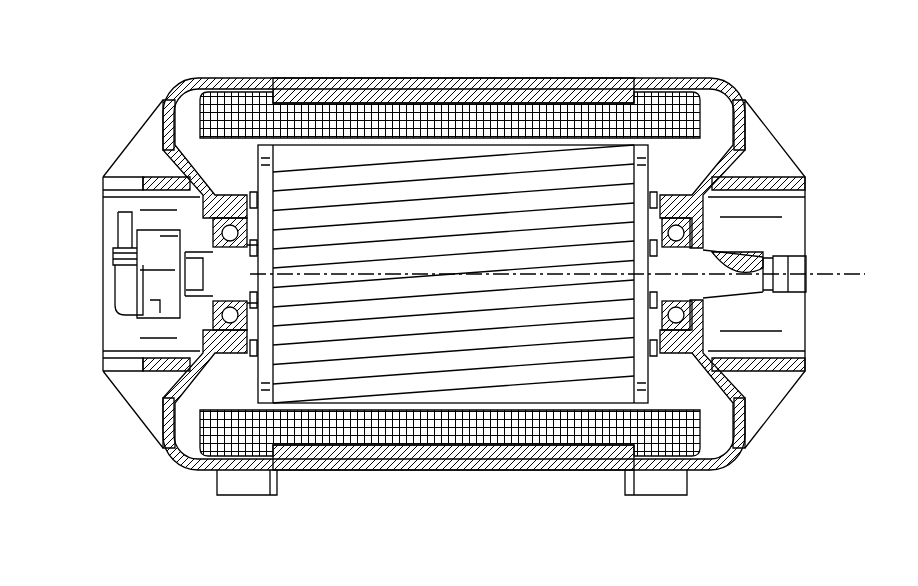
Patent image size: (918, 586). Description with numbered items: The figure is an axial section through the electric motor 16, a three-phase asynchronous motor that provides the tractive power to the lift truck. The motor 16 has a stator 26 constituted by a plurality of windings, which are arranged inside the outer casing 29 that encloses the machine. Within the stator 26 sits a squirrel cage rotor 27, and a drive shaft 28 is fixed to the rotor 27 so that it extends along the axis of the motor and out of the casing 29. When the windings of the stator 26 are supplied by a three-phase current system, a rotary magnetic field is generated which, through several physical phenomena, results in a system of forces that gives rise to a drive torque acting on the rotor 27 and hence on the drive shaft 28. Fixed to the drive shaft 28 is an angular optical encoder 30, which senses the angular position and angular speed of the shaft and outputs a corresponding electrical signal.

The electric motor 16 is at (123, 98).
The stator 26 is at (536, 117).
The squirrel cage rotor 27 is at (372, 182).
The drive shaft 28 is at (789, 273).
The outer casing 29 is at (233, 78).
The angular optical encoder 30 is at (153, 262).